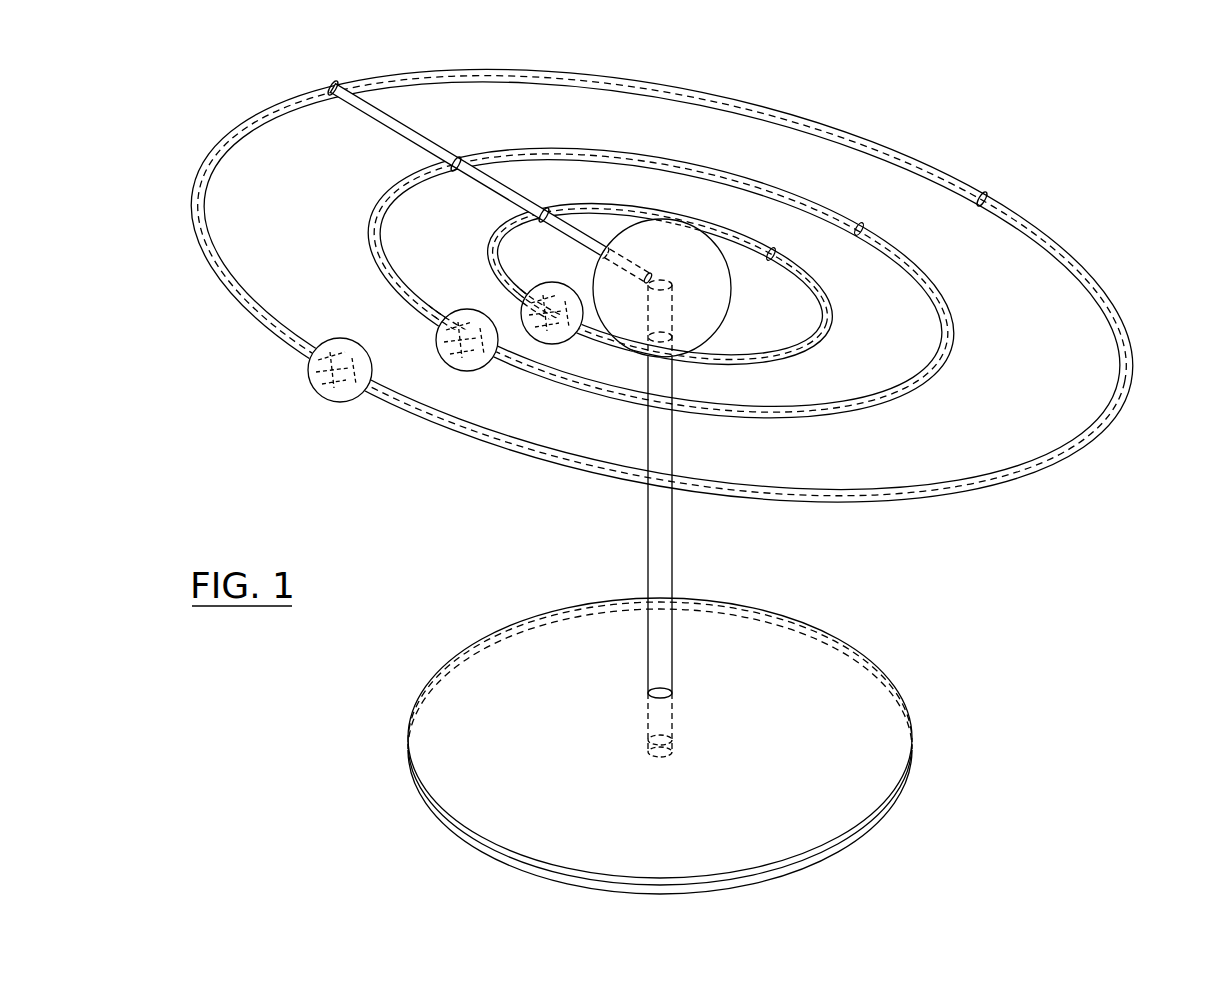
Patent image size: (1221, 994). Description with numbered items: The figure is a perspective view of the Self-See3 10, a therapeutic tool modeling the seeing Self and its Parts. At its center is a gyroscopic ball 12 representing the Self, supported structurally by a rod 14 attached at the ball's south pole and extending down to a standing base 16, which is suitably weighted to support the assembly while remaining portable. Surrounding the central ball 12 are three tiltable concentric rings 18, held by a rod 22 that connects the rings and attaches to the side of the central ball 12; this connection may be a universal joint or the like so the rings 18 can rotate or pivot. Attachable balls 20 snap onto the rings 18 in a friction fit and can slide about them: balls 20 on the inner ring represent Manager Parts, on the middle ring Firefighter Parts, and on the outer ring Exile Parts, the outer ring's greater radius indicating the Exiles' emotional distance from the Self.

The Self-See3 10 is at (1028, 126).
The central gyroscopic ball 12 is at (711, 283).
The rod 14 is at (668, 547).
The standing base 16 is at (857, 724).
The tiltable concentric rings 18 is at (823, 326).
The attachable balls 20 is at (544, 345).
The rod 22 is at (388, 128).